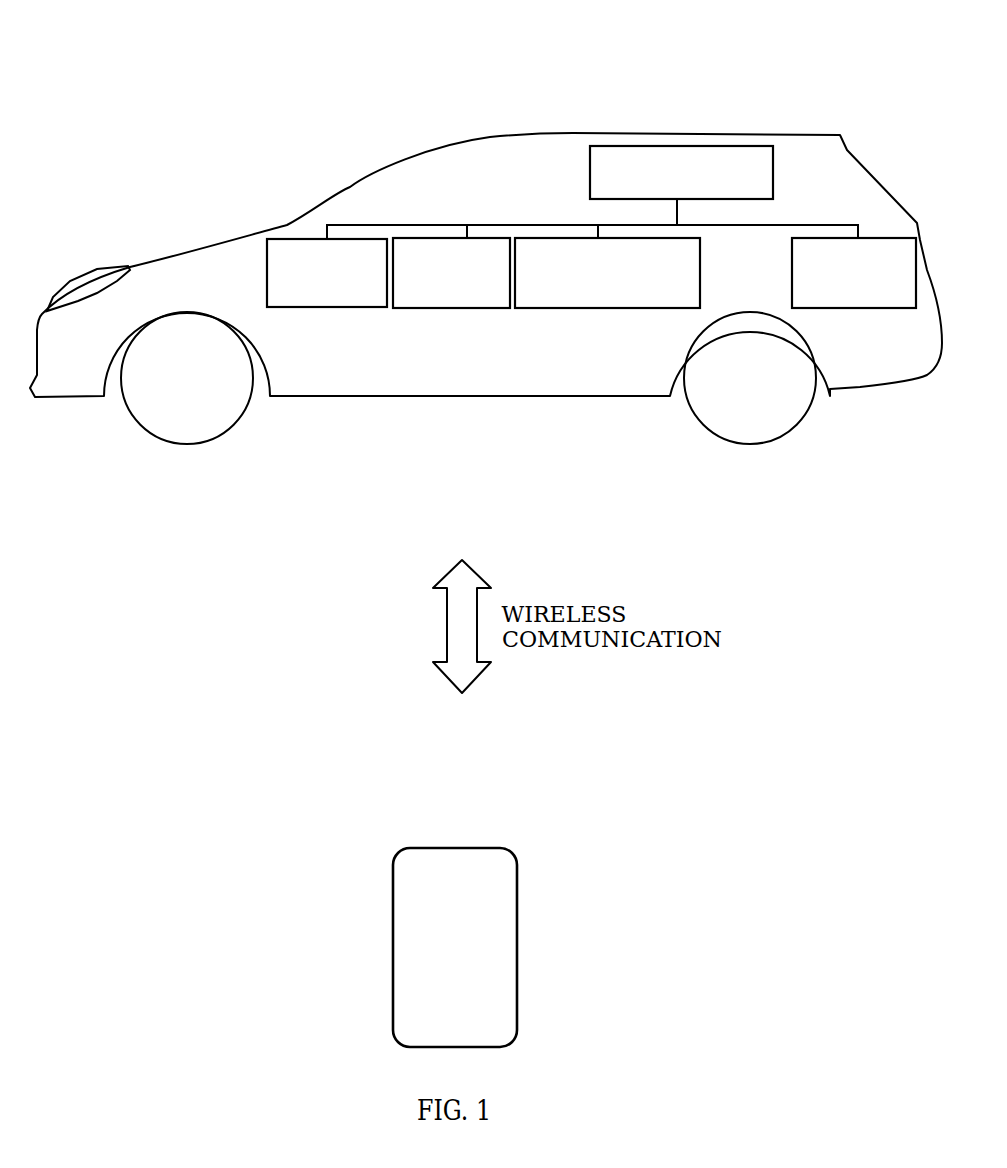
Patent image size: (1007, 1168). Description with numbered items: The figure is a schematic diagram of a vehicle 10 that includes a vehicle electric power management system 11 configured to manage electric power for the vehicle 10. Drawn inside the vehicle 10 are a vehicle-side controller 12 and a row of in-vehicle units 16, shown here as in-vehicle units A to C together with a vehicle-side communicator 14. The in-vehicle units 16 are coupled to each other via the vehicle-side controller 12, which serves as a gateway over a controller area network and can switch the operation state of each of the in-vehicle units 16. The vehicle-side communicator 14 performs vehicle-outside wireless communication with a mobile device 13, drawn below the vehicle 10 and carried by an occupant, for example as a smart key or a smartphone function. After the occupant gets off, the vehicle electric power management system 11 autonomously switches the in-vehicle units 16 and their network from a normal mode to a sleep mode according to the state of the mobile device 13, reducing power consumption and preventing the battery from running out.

The vehicle 10 is at (486, 228).
The vehicle electric power management system 11 is at (500, 100).
The vehicle-side controller 12 is at (657, 140).
The mobile device 13 is at (517, 927).
The vehicle-side communicator 14 is at (603, 310).
The in-vehicle units 16 is at (410, 327).